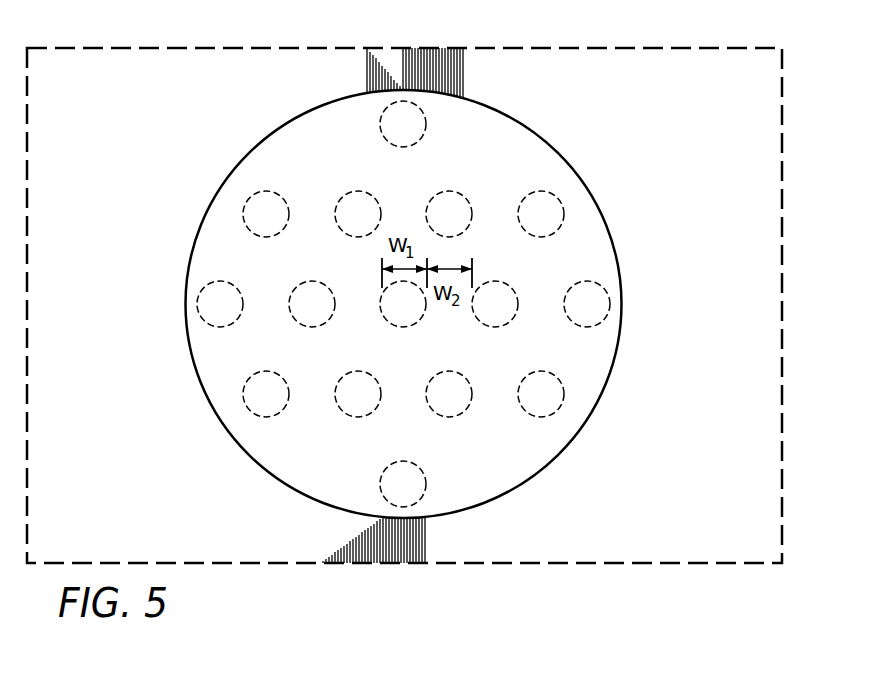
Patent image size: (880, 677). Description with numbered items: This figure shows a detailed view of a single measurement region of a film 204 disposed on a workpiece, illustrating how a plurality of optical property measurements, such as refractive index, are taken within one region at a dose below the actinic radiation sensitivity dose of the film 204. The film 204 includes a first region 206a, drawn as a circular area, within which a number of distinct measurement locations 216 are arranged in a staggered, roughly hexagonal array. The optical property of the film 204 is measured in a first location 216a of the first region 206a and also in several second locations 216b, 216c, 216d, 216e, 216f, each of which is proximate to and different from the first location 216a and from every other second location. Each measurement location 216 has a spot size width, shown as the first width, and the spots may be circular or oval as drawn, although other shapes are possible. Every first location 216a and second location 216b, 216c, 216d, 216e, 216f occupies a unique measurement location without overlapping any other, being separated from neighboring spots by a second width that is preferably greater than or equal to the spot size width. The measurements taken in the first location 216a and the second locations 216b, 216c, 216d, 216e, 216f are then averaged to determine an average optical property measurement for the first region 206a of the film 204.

The film 204 is at (128, 321).
The first region 206a is at (286, 129).
The measurement location 216 is at (285, 413).
The first location 216a is at (390, 323).
The second location 216b is at (508, 322).
The second location 216c is at (438, 193).
The second location 216d is at (548, 234).
The second location 216e is at (425, 130).
The second location 216f is at (343, 230).